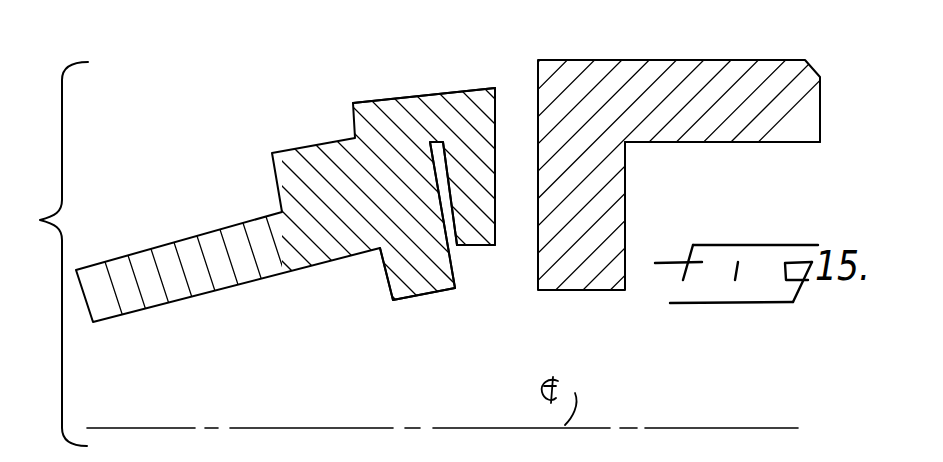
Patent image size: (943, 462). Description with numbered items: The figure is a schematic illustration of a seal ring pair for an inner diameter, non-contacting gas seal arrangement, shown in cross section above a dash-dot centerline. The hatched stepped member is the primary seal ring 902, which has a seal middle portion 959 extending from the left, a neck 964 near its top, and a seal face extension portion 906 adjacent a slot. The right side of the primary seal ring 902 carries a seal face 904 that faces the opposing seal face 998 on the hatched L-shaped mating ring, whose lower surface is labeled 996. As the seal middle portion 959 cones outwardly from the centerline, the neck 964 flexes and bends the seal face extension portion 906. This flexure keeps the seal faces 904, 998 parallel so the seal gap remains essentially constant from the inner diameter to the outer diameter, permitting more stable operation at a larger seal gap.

The primary seal ring 902 is at (318, 132).
The seal face 904 is at (497, 112).
The seal extension portion 906 is at (477, 232).
The seal middle portion 959 is at (393, 192).
The neck 964 is at (437, 120).
The lower surface of housing flange 996 is at (734, 130).
The seal face 998 is at (538, 76).